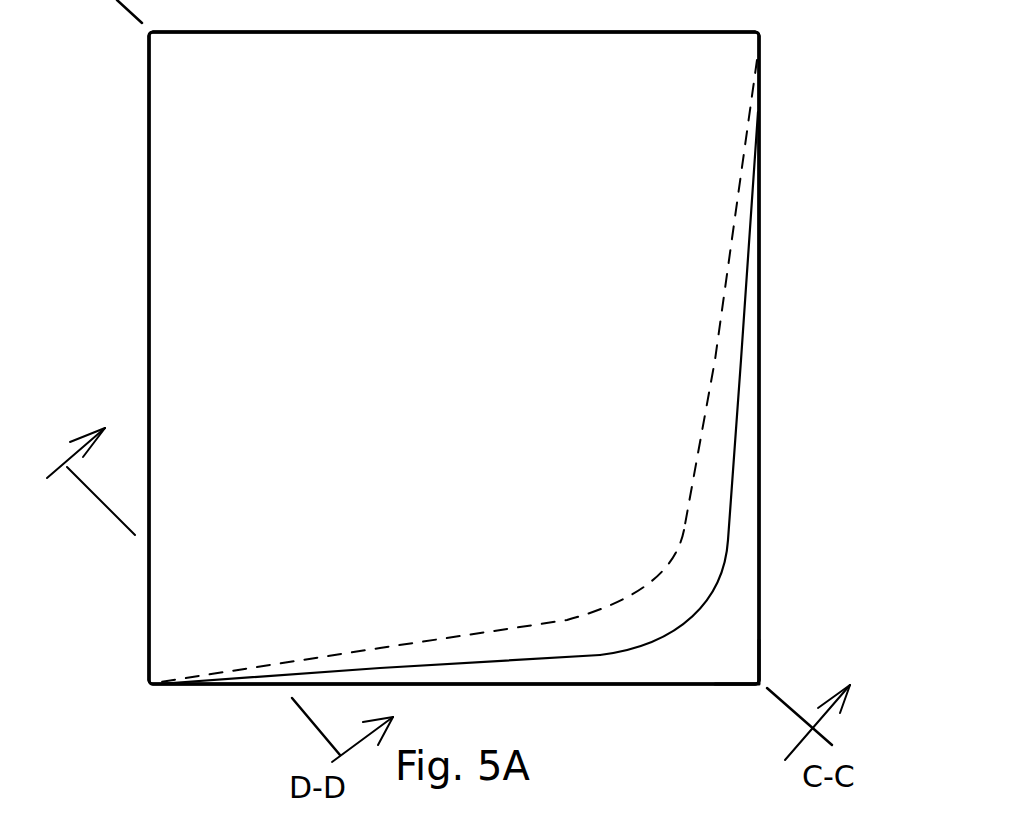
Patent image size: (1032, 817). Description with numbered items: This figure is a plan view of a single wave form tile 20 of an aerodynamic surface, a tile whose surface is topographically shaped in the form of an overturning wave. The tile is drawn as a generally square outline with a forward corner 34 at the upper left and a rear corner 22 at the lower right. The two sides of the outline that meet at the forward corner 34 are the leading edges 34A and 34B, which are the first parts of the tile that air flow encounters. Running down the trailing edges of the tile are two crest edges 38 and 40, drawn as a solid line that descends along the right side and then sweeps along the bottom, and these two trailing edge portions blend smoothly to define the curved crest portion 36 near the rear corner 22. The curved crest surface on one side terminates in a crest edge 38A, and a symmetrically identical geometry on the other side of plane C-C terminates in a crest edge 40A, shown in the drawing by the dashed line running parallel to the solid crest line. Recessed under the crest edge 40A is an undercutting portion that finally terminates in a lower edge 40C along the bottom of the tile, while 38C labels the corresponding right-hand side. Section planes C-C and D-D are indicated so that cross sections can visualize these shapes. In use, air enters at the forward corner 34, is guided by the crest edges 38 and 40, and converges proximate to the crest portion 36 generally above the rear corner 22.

The wave form tile 20 is at (425, 327).
The rear corner 22 is at (743, 667).
The forward corner 34 is at (210, 92).
The leading edge 34A is at (458, 33).
The leading edge 34B is at (150, 316).
The crest portion 36 is at (680, 597).
The crest edge 38 is at (726, 463).
The crest edge 38A is at (736, 447).
The outer surface of right wall section 38C is at (760, 466).
The crest edge 40 is at (555, 642).
The crest edge 40A is at (513, 658).
The lower edge 40C is at (547, 686).